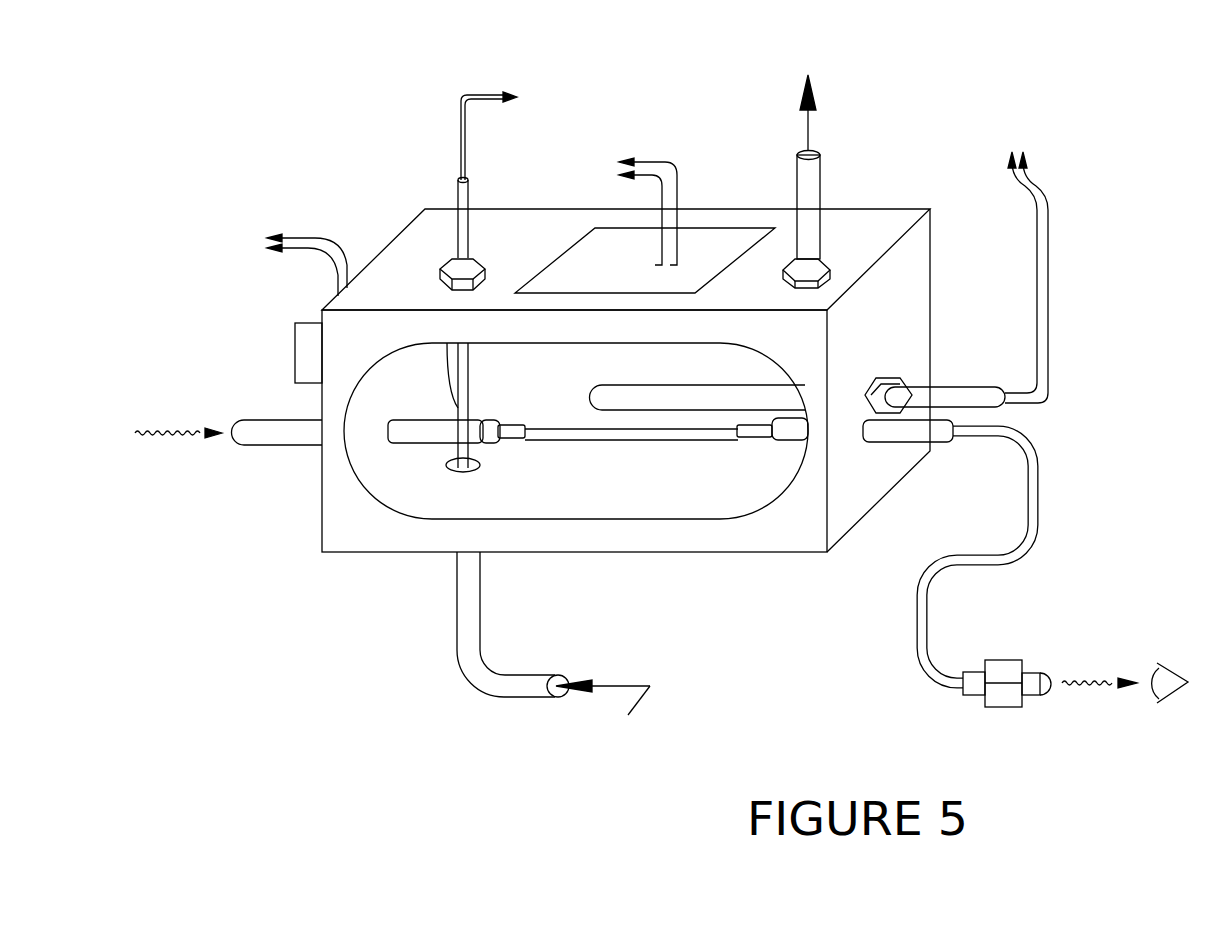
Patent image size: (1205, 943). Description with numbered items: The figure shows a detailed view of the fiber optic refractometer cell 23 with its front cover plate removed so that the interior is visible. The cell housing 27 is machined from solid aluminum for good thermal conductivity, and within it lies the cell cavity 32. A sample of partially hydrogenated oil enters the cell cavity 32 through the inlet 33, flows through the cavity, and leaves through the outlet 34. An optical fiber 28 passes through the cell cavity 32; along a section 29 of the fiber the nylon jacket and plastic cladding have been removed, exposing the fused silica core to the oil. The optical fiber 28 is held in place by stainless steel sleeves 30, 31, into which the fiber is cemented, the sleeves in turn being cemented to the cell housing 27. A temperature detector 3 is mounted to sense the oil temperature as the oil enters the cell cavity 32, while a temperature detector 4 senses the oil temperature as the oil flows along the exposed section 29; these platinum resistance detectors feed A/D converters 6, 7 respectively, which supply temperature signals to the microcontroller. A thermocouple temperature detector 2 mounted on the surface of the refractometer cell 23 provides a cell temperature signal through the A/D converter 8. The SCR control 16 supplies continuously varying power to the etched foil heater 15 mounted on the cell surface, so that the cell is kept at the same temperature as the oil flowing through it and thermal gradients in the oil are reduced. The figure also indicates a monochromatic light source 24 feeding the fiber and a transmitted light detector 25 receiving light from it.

The temperature detector 2 is at (303, 342).
The temperature detector 3 is at (462, 240).
The temperature detector 4 is at (932, 390).
The A/D converter 6 is at (1045, 138).
The A/D converter 7 is at (549, 80).
The A/D converter 8 is at (222, 220).
The heater 15 is at (572, 257).
The SCR control 16 is at (658, 138).
The refractometer cell 23 is at (345, 100).
The monochromatic light source 24 is at (163, 533).
The transmitted light detector 25 is at (1093, 740).
The cell housing 27 is at (593, 540).
The optical fiber 28 is at (753, 432).
The exposed section of the optical fiber 29 is at (643, 432).
The stainless steel sleeve 30 is at (291, 431).
The stainless steel sleeve 31 is at (903, 432).
The cell cavity 32 is at (553, 463).
The inlet 33 is at (625, 766).
The outlet 34 is at (853, 60).